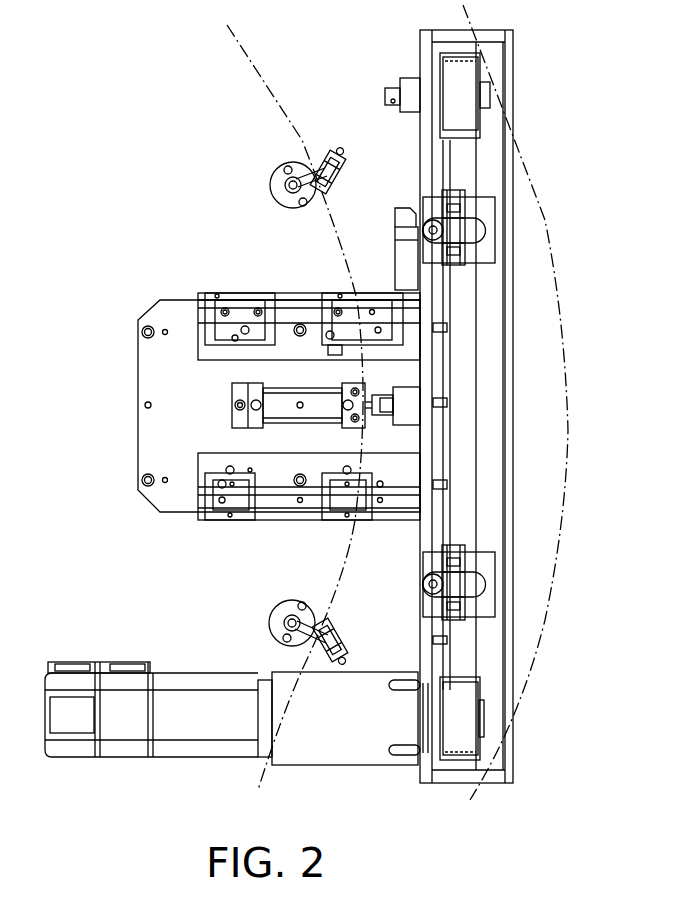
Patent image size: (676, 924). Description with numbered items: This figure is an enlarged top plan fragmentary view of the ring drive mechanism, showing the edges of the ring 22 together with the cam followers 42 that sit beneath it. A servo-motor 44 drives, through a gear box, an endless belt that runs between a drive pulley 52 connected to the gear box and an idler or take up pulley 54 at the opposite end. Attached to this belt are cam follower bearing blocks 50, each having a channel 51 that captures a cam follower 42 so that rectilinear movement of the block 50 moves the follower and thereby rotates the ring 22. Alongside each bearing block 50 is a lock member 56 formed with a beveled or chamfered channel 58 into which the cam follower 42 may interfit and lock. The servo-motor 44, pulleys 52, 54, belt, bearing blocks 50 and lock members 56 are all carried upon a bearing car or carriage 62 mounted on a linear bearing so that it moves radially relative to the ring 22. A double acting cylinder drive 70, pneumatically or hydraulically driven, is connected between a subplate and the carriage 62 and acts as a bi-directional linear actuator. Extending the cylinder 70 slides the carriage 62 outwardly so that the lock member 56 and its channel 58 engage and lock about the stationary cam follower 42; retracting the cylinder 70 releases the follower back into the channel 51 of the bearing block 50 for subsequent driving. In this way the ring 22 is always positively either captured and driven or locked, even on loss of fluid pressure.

The ring 22 is at (567, 272).
The cam follower 42 is at (432, 220).
The servo-motor 44 is at (62, 757).
The cam follower bearing block 50 is at (495, 204).
The channel 51 is at (480, 232).
The drive pulley 52 is at (480, 720).
The idler or take up pulley 54 is at (480, 70).
The lock member 56 is at (395, 288).
The chamfered channel 58 is at (410, 245).
The bearing car or carriage 62 is at (513, 672).
The double acting cylinder drive 70 is at (283, 383).